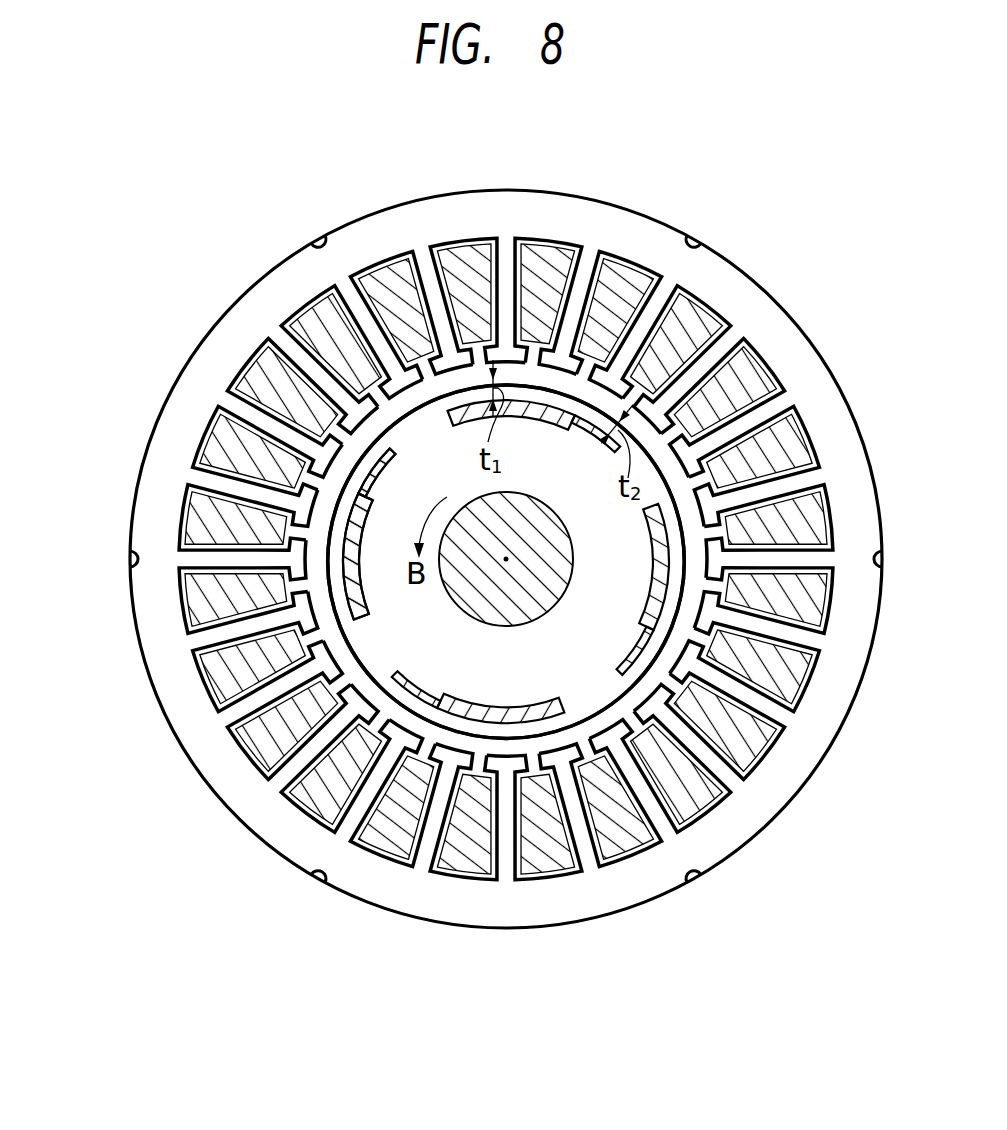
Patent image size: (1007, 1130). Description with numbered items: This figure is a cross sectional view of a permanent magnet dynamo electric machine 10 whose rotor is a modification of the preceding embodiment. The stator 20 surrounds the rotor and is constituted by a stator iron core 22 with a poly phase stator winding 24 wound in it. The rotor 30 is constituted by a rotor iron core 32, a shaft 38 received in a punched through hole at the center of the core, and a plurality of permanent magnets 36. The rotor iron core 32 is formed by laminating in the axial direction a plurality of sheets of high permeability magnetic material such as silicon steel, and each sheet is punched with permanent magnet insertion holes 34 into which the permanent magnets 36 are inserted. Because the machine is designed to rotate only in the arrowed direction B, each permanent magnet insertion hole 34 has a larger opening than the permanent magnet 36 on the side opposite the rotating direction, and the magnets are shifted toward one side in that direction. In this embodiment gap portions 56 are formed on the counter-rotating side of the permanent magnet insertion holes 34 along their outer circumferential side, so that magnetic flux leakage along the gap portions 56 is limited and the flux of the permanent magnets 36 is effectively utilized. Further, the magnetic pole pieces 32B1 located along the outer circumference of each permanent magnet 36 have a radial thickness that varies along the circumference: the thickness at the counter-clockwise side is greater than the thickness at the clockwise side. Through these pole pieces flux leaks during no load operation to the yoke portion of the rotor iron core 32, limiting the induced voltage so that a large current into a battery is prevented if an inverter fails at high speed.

The permanent magnet dynamo electric machine 10 is at (779, 221).
The stator 20 is at (273, 224).
The stator iron core 22 is at (225, 326).
The poly phase stator winding 24 is at (232, 382).
The rotor 30 is at (593, 642).
The rotor iron core 32 is at (353, 624).
The magnetic pole piece 32B1 is at (542, 393).
The permanent magnet insertion hole 34 is at (315, 503).
The permanent magnet 36 is at (347, 546).
The shaft 38 is at (472, 604).
The gap portion 56 is at (385, 478).